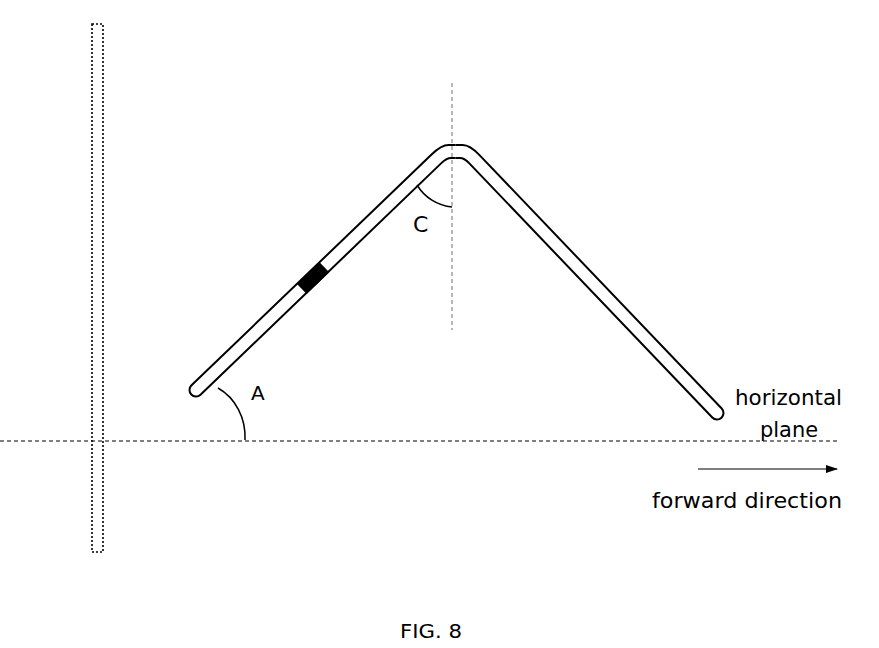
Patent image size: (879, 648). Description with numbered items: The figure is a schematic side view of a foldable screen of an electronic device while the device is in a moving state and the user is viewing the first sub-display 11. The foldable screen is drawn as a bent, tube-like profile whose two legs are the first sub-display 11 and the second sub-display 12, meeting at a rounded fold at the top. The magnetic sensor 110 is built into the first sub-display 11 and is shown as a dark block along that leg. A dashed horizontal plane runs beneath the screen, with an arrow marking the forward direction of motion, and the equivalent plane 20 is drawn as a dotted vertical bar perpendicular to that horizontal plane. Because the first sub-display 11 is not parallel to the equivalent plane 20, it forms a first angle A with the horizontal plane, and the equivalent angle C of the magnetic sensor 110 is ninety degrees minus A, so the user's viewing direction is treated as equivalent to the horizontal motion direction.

The equivalent plane 20 is at (92, 180).
The first sub-display 11 is at (372, 207).
The second sub-display 12 is at (568, 245).
The magnetic sensor 110 is at (305, 277).